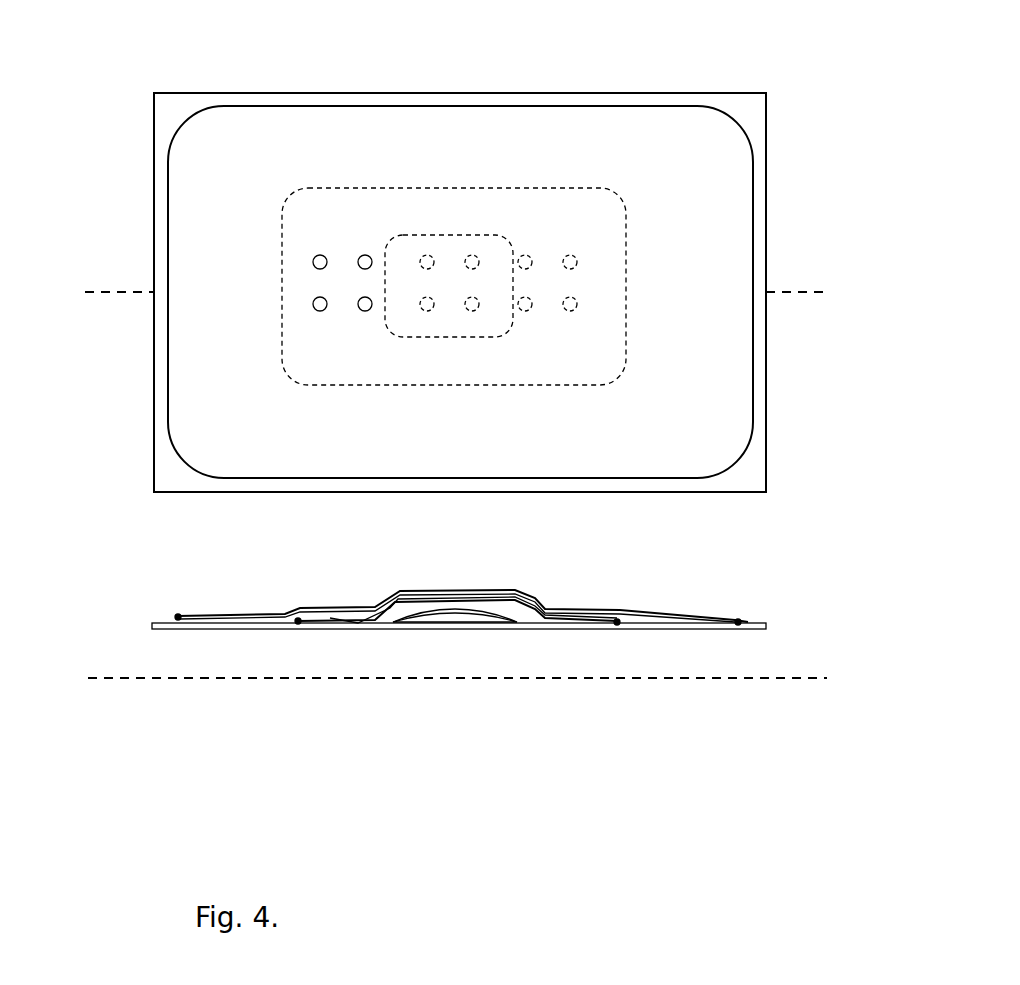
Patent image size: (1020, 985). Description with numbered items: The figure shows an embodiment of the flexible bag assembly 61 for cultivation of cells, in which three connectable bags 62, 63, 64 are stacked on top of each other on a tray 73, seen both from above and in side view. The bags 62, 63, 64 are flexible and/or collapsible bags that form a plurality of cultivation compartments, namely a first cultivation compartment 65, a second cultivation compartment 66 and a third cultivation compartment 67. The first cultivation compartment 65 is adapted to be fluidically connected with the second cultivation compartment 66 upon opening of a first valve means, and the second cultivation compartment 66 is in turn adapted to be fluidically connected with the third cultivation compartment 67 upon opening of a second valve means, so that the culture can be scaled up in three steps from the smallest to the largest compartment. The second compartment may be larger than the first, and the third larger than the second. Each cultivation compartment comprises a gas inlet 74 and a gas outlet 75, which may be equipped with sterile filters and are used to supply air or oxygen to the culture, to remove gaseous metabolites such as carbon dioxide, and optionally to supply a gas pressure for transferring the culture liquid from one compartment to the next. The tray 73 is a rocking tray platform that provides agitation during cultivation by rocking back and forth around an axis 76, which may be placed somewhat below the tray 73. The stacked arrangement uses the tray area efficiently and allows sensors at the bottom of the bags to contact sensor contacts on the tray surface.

The flexible bag assembly 61 is at (102, 561).
The bag 62 is at (448, 235).
The bag 63 is at (358, 188).
The bag 64 is at (252, 106).
The first cultivation compartment 65 is at (502, 253).
The second cultivation compartment 66 is at (565, 215).
The third cultivation compartment 67 is at (651, 145).
The tray 73 is at (738, 620).
The gas inlet 74 is at (518, 258).
The gas outlet 75 is at (564, 266).
The axis 76 is at (804, 292).